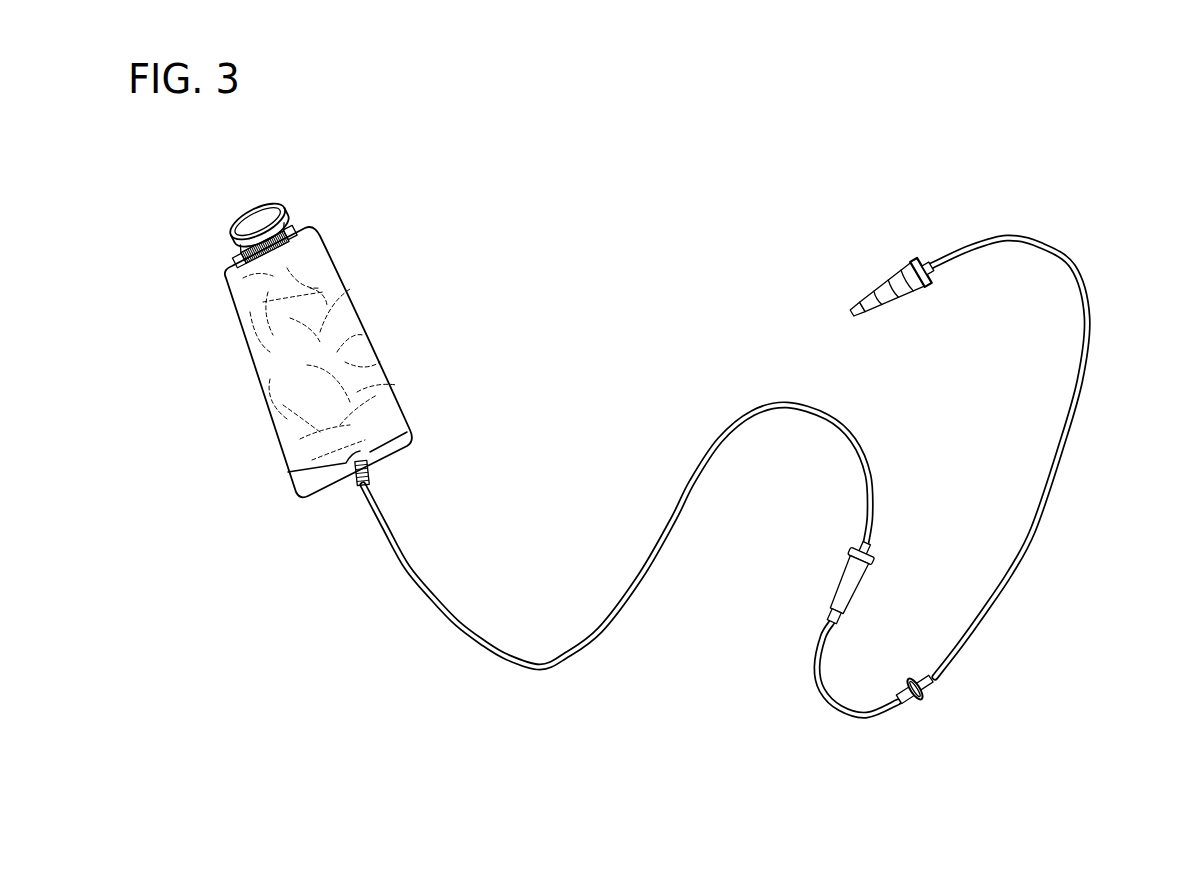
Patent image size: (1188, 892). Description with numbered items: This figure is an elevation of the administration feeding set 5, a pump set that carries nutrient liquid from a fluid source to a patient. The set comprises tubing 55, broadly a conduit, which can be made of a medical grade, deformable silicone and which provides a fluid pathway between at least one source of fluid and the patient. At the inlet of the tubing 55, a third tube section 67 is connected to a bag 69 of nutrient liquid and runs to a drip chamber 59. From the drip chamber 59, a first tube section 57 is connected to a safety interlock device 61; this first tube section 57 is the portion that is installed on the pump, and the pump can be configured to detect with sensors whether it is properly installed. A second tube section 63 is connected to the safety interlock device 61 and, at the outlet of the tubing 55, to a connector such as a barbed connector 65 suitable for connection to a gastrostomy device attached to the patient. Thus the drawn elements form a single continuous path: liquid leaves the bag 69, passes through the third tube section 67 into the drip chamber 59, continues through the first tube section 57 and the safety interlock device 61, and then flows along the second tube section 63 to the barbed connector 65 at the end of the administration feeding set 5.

The administration feeding set 5 is at (1098, 148).
The tubing 55 is at (508, 680).
The first tube section 57 is at (830, 700).
The drip chamber 59 is at (833, 593).
The safety interlock device 61 is at (928, 709).
The second tube section 63 is at (1035, 532).
The barbed connector 65 is at (903, 268).
The third tube section 67 is at (437, 587).
The bag 69 is at (338, 270).